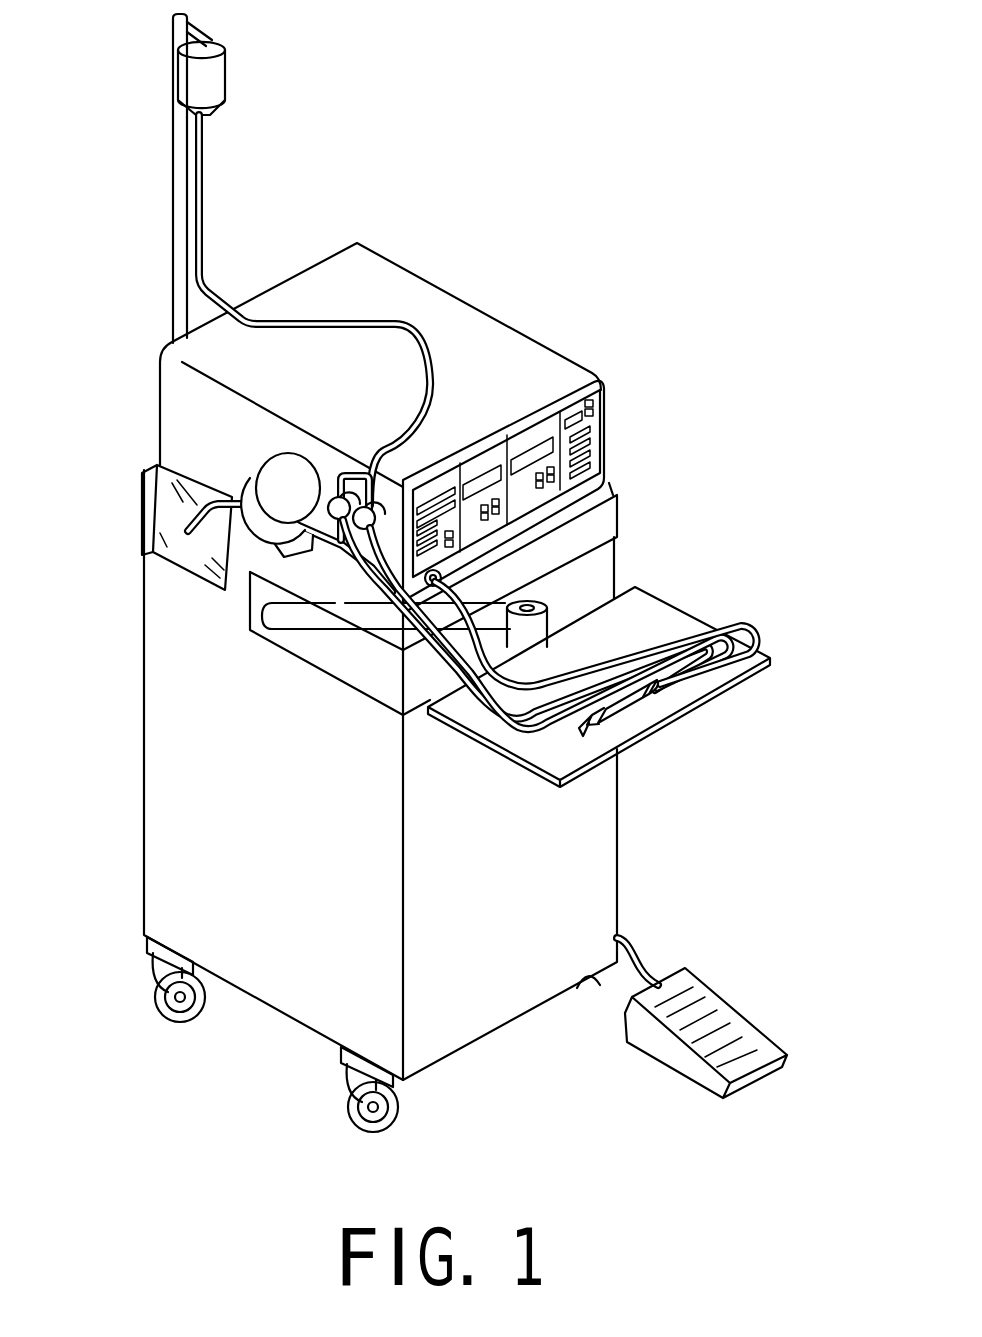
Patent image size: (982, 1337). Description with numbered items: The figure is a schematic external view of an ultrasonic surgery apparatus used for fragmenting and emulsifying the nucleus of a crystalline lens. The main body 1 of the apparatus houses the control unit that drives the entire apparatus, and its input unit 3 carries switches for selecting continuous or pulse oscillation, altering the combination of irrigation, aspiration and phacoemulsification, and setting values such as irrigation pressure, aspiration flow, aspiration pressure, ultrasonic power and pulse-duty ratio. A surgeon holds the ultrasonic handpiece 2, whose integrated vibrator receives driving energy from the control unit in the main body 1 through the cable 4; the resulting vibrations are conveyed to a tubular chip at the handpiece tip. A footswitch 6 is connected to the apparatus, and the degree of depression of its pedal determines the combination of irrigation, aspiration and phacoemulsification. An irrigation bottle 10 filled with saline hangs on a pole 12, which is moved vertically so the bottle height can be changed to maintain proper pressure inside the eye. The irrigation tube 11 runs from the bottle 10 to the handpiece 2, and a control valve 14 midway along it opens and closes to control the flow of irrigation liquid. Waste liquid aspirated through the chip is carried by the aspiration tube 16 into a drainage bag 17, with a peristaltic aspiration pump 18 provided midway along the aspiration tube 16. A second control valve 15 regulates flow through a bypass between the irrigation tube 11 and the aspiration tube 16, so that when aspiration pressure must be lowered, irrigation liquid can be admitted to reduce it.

The main body 1 is at (537, 372).
The ultrasonic handpiece 2 is at (632, 707).
The input unit 3 is at (593, 440).
The cable 4 is at (655, 625).
The footswitch 6 is at (727, 1002).
The irrigation bottle 10 is at (210, 90).
The irrigation tube 11 is at (380, 320).
The pole 12 is at (173, 218).
The control valve 14 is at (378, 506).
The control valve 15 is at (333, 497).
The aspiration tube 16 is at (440, 663).
The drainage bag 17 is at (173, 520).
The peristaltic aspiration pump 18 is at (250, 450).